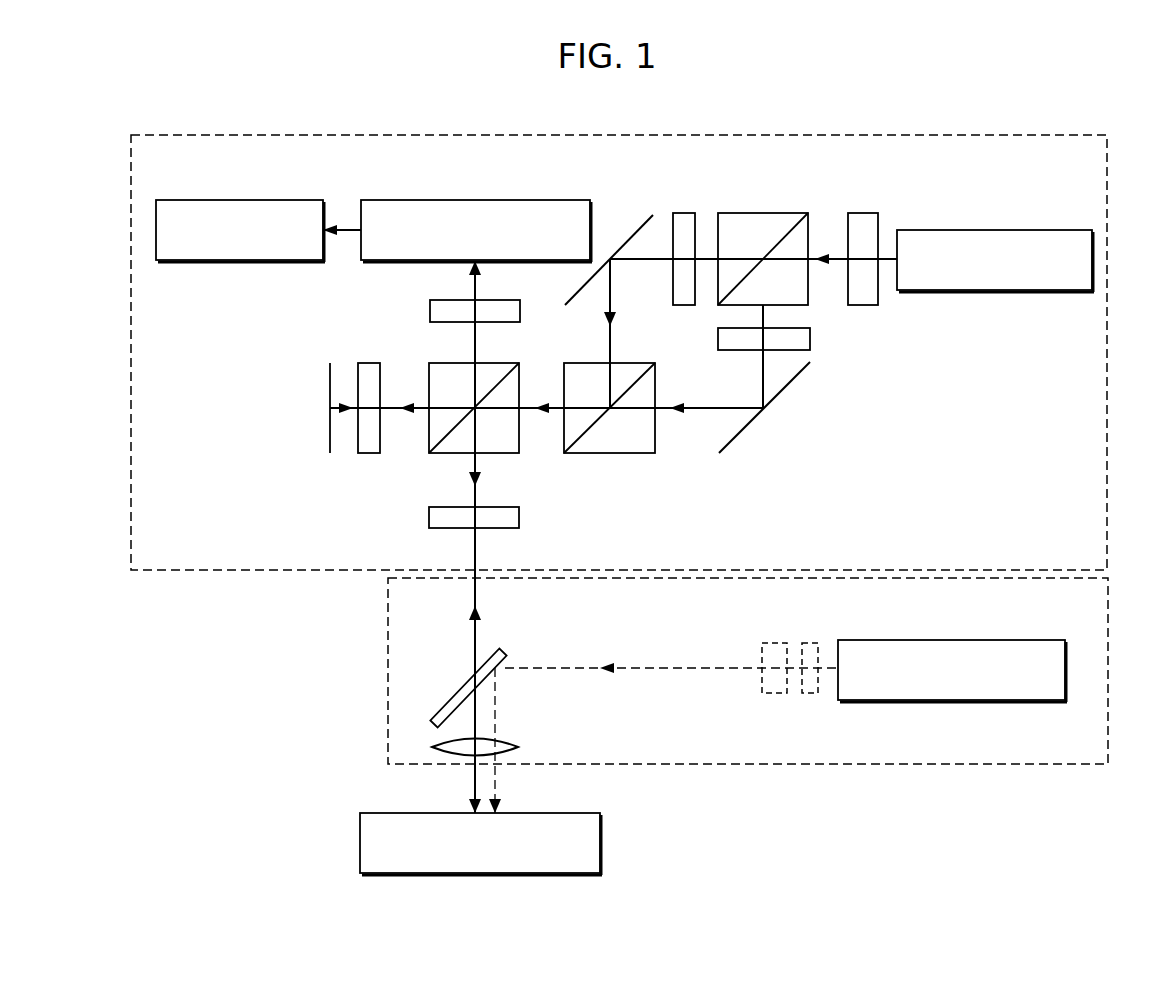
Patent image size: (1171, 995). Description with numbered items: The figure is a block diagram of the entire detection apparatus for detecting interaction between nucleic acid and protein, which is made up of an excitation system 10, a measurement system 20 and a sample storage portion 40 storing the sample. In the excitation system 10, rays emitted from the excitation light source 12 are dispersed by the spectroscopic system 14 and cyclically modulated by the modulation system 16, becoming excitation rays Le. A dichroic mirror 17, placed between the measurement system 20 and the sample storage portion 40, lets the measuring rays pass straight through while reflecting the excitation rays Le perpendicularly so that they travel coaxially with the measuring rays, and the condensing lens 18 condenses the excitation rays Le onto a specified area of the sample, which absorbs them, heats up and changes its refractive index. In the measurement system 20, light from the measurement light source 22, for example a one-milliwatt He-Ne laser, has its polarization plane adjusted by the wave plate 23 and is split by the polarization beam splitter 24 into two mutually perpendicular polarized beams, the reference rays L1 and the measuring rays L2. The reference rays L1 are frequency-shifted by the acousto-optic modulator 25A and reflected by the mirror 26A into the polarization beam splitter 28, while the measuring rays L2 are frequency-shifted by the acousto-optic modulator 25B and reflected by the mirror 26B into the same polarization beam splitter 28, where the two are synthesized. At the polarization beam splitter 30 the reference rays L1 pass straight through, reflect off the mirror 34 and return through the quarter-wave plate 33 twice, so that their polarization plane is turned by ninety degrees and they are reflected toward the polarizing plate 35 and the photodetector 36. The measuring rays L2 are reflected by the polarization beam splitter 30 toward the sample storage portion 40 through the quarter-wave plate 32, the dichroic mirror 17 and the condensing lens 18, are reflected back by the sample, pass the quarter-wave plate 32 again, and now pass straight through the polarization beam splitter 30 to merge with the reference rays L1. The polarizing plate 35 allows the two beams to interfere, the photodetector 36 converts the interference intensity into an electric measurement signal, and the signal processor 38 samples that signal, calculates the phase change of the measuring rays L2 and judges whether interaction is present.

The excitation system 10 is at (1110, 668).
The excitation light source 12 is at (921, 640).
The spectroscopic system 14 is at (814, 643).
The modulation system 16 is at (775, 643).
The dichroic mirror 17 is at (442, 714).
The condensing lens 18 is at (510, 745).
The measurement system 20 is at (1110, 357).
The measurement light source 22 is at (952, 230).
The wave plate 23 is at (860, 213).
The polarization beam splitter 24 is at (762, 213).
The acousto-optic modulator 25A is at (742, 351).
The acousto-optic modulator 25B is at (685, 212).
The mirror 26A is at (724, 453).
The mirror 26B is at (632, 235).
The polarization beam splitter 28 is at (617, 455).
The polarization beam splitter 30 is at (497, 455).
The quarter-wave plate 32 is at (429, 519).
The quarter-wave plate 33 is at (368, 455).
The mirror 34 is at (330, 425).
The polarizing plate 35 is at (430, 312).
The photodetector 36 is at (465, 200).
The signal processor 38 is at (277, 200).
The sample storage portion 40 is at (603, 842).
The reference rays L1 is at (400, 412).
The measuring rays L2 is at (611, 344).
The excitation rays Le is at (643, 668).